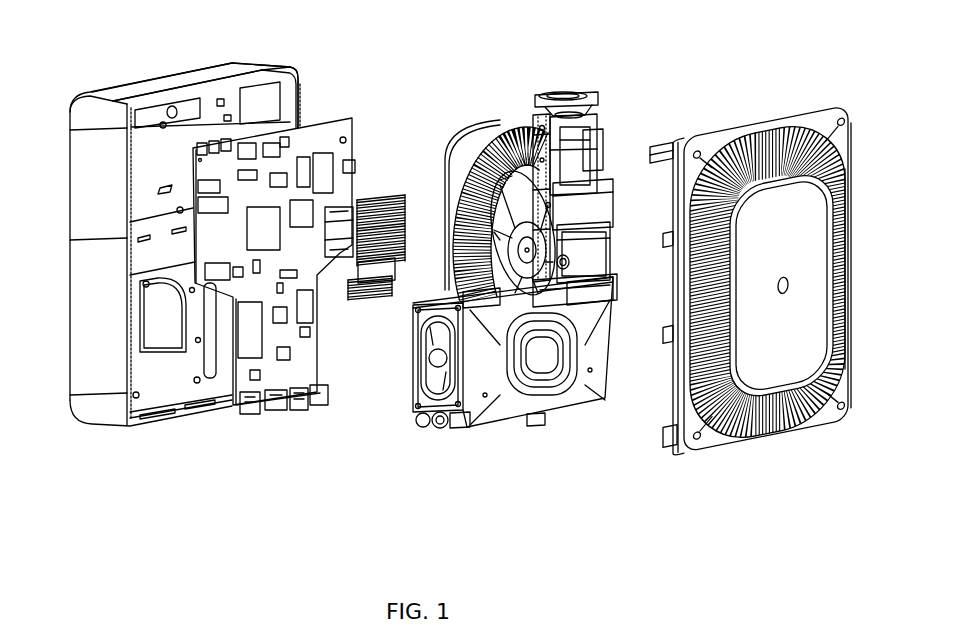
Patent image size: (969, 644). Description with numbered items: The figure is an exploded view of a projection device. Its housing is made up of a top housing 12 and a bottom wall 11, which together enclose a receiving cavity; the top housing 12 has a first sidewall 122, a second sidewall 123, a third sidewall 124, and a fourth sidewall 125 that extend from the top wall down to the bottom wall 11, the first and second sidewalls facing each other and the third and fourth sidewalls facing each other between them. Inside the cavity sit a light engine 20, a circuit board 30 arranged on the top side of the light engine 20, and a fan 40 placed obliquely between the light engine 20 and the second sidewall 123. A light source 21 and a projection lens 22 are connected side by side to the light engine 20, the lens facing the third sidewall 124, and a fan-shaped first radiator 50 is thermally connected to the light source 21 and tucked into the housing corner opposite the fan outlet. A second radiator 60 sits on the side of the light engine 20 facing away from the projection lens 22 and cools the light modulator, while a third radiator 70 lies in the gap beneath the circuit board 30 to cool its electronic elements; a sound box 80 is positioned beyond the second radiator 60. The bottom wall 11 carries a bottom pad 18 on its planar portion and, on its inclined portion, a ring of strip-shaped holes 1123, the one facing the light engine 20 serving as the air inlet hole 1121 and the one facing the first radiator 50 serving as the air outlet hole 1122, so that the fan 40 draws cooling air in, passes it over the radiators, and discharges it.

The bottom wall 11 is at (769, 118).
The top housing 12 is at (75, 76).
The bottom pad 18 is at (764, 390).
The light engine 20 is at (589, 196).
The light source 21 is at (545, 116).
The projection lens 22 is at (579, 93).
The circuit board 30 is at (353, 120).
The fan 40 is at (522, 217).
The first radiator 50 is at (487, 130).
The second radiator 60 is at (601, 240).
The third radiator 70 is at (373, 296).
The sound box 80 is at (541, 414).
The first sidewall 122 is at (300, 80).
The second sidewall 123 is at (100, 264).
The third sidewall 124 is at (168, 92).
The fourth sidewall 125 is at (195, 416).
The air inlet hole 1121 is at (849, 253).
The air outlet hole 1122 is at (712, 233).
The strip-shaped holes 1123 is at (824, 405).